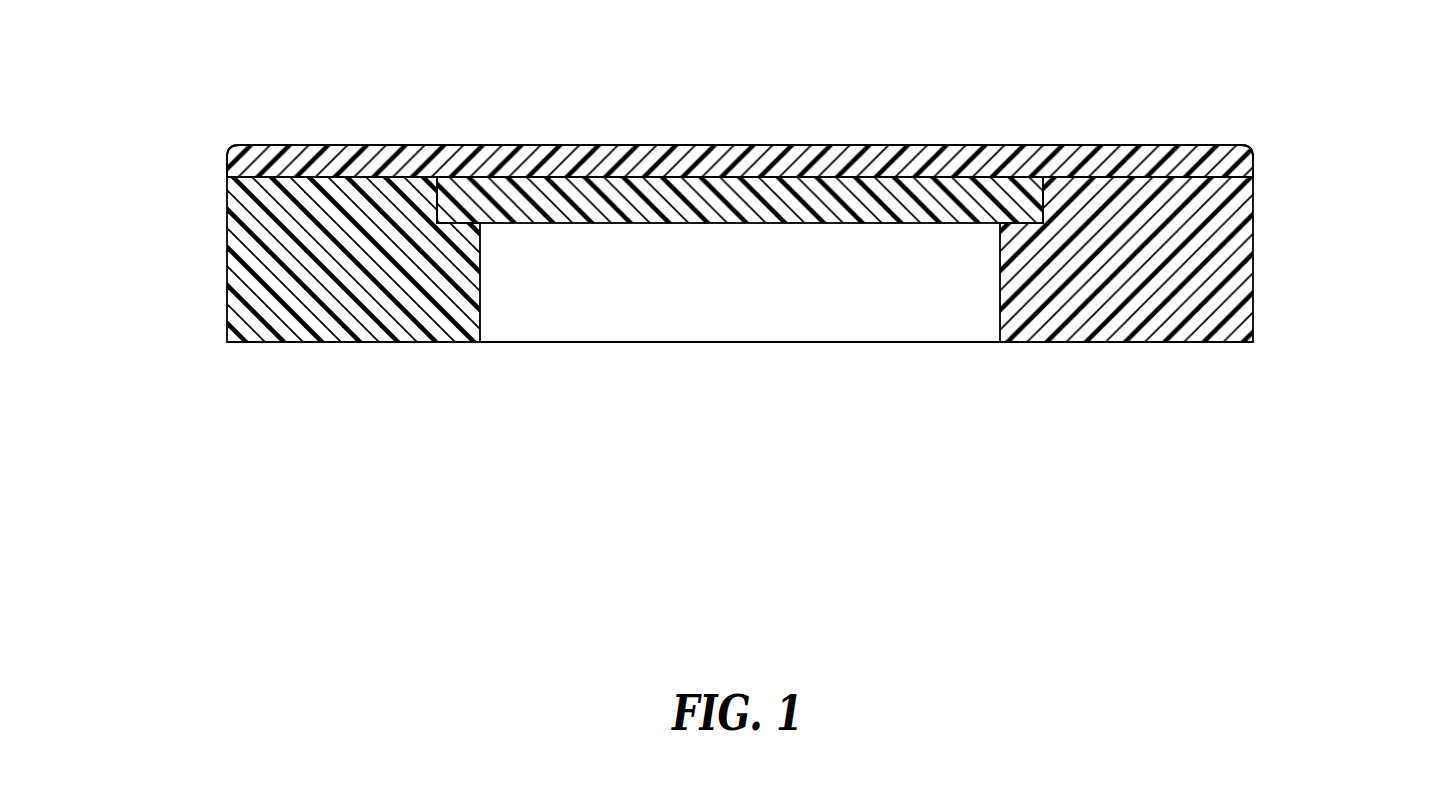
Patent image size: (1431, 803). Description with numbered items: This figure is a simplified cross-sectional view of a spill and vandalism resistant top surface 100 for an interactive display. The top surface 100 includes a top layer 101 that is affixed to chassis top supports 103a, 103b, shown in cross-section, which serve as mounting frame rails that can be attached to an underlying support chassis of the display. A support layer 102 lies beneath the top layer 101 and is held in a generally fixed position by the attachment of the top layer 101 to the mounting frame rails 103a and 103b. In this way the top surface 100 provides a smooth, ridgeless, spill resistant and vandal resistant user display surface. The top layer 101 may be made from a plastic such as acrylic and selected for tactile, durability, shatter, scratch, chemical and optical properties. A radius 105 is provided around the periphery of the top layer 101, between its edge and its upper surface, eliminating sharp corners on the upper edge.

The top surface 100 is at (735, 277).
The top layer 101 is at (360, 146).
The support layer 102 is at (695, 223).
The chassis top support 103a is at (227, 237).
The chassis top support 103b is at (1253, 247).
The radius 105 is at (237, 147).